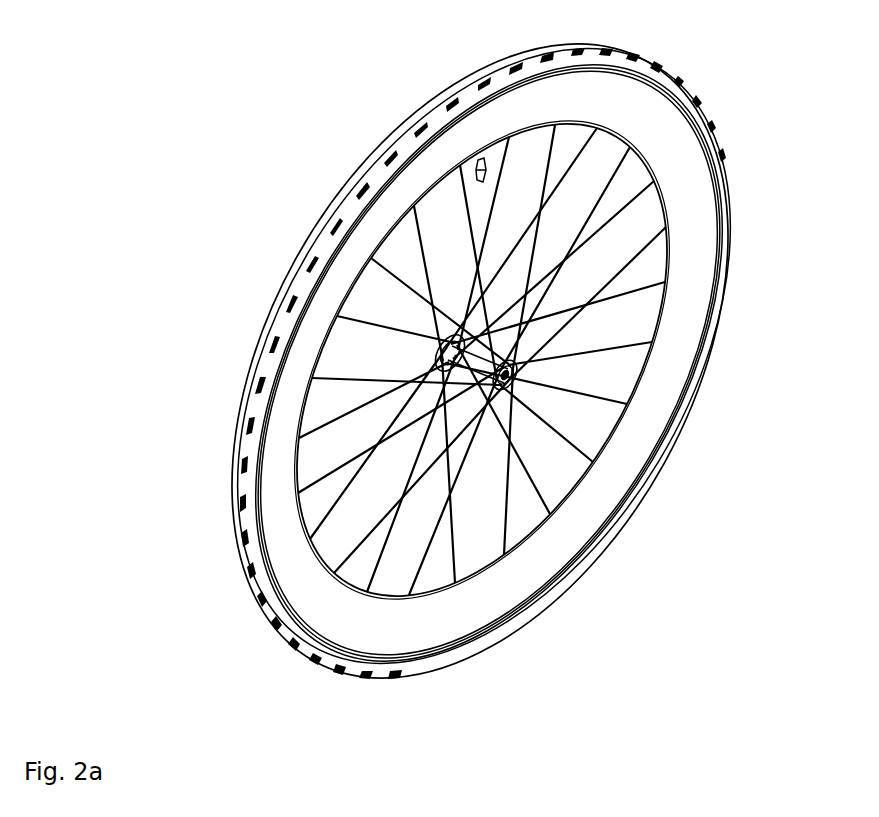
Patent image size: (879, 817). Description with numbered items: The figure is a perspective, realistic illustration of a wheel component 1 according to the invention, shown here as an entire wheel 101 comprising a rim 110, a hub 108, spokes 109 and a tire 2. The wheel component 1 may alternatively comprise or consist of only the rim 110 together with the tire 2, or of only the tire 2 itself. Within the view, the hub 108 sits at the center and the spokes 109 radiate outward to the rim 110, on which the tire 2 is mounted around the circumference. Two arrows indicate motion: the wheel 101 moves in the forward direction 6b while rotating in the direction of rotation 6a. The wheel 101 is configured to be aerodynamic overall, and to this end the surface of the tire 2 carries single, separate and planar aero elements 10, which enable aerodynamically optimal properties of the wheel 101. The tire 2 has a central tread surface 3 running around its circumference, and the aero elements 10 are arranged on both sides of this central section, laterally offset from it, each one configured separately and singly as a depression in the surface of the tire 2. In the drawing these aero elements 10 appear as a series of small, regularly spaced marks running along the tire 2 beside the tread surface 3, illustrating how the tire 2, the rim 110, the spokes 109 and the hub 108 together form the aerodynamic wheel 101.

The wheel 101 is at (237, 126).
The wheel component 1 is at (723, 100).
The tire 2 is at (236, 481).
The tread surface 3 is at (323, 227).
The aero elements 10 is at (262, 352).
The direction of rotation 6a is at (438, 80).
The forward direction 6b is at (640, 503).
The hub 108 is at (440, 348).
The spokes 109 is at (407, 500).
The rim 110 is at (690, 327).